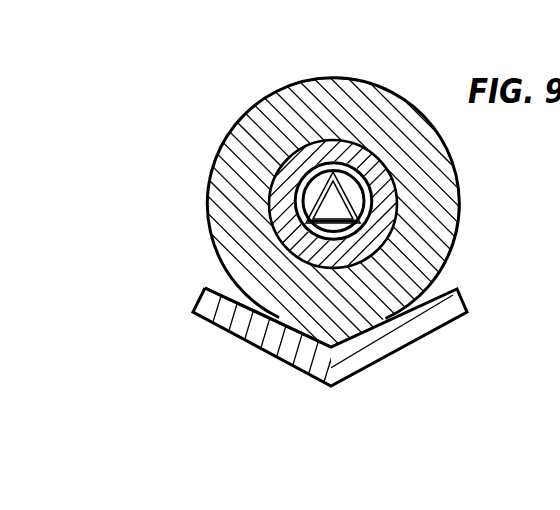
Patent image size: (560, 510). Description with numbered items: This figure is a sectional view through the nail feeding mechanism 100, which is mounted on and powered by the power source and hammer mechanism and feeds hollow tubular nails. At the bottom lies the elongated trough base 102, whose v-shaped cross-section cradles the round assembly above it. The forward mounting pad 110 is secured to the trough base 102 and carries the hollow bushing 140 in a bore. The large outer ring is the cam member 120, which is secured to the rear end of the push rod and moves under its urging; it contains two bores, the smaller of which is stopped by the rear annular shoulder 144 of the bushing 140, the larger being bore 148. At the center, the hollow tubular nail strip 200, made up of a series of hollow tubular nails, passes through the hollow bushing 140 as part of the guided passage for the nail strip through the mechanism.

The nail feeding mechanism 100 is at (335, 249).
The trough base 102 is at (330, 333).
The forward mounting pad 110 is at (290, 334).
The cam member 120 is at (417, 162).
The hollow bushing 140 is at (368, 218).
The rear annular shoulder 144 is at (373, 226).
The bore 148 is at (388, 192).
The hollow tubular nail strip 200 is at (307, 199).